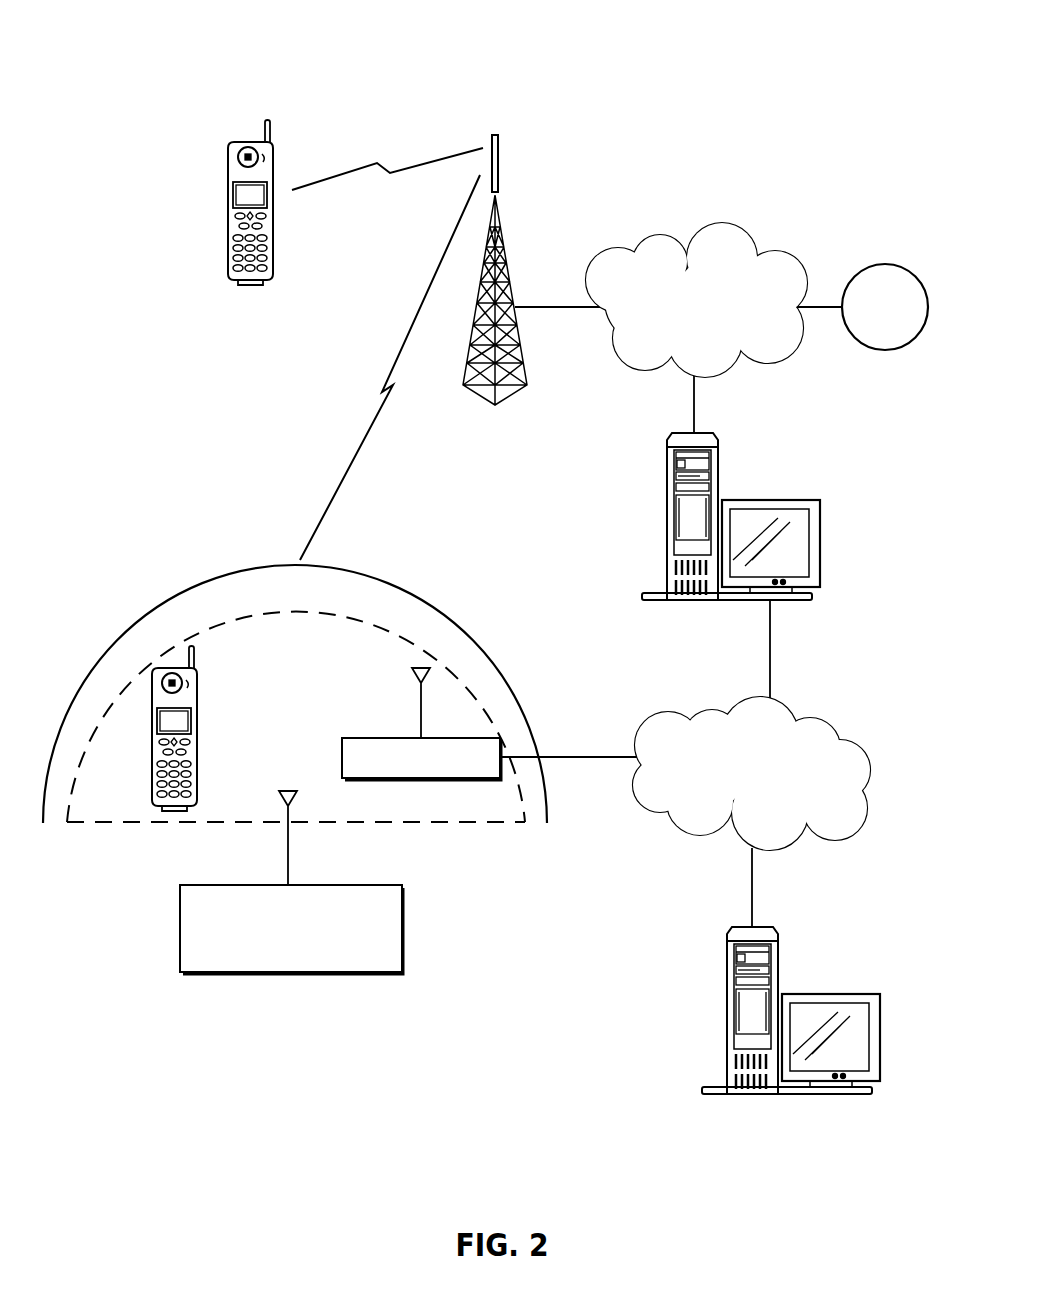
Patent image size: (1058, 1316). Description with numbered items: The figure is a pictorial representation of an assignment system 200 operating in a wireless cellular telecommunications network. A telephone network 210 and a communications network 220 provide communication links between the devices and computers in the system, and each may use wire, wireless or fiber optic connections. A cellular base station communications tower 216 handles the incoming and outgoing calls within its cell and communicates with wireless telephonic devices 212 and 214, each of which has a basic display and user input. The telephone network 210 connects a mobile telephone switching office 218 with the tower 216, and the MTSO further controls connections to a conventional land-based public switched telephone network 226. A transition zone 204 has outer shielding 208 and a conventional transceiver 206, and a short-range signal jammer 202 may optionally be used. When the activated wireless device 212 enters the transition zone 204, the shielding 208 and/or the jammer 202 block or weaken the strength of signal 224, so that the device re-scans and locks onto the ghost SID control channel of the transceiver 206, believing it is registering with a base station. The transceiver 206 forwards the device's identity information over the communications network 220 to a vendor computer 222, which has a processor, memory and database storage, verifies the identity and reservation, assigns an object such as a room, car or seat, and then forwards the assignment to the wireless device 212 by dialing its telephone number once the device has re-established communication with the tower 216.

The assignment system 200 is at (741, 128).
The short-range signal jammer 202 is at (405, 955).
The transition zone 204 is at (277, 689).
The transceiver 206 is at (338, 752).
The outer shielding 208 is at (173, 598).
The telephone network 210 is at (770, 253).
The wireless telephonic device 212 is at (150, 768).
The wireless telephonic device 214 is at (225, 244).
The cellular base station communications tower 216 is at (503, 400).
The mobile telephone switching office 218 is at (820, 522).
The communications network 220 is at (872, 760).
The vendor computer 222 is at (878, 1015).
The signal 224 is at (340, 483).
The public switched telephone network 226 is at (900, 263).